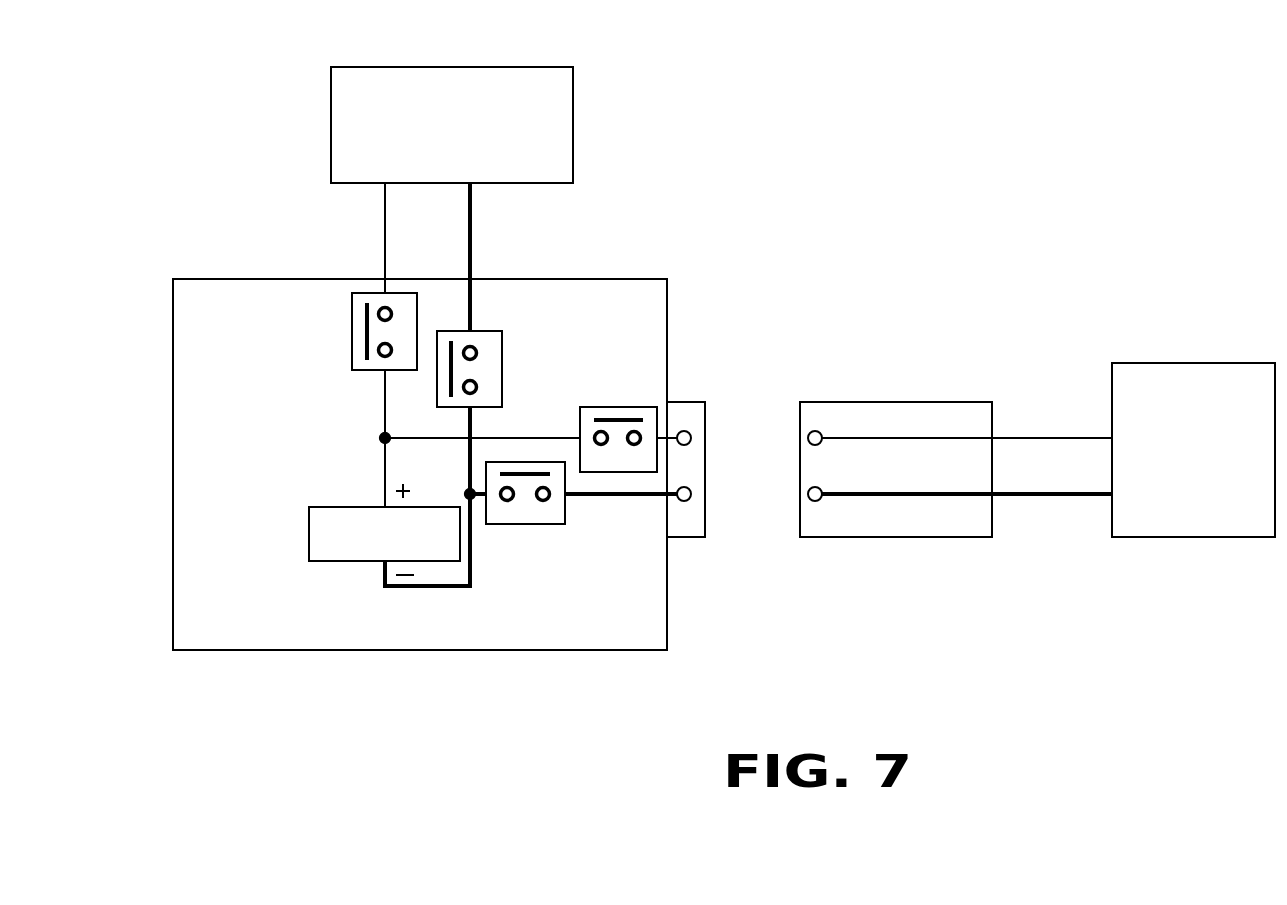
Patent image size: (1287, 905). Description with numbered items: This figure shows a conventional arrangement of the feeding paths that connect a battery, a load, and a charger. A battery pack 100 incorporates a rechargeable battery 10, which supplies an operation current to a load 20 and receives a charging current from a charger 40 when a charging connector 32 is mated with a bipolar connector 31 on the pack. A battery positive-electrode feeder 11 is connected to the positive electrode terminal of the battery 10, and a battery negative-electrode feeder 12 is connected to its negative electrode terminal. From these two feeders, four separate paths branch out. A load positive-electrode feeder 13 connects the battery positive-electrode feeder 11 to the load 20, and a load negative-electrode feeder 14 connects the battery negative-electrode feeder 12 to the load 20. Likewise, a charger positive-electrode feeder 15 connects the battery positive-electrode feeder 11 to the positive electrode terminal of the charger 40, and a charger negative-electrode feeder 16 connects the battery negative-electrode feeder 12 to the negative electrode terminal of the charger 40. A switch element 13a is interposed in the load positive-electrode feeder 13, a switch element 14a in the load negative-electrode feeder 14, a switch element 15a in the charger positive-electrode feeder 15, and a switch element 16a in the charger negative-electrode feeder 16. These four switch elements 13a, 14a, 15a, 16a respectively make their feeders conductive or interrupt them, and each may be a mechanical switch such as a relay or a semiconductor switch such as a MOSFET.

The battery pack 100 is at (315, 650).
The load 20 is at (458, 66).
The battery 10 is at (309, 540).
The battery positive-electrode feeder 11 is at (385, 480).
The battery negative-electrode feeder 12 is at (470, 577).
The load positive-electrode feeder 13 is at (385, 413).
The switch element 13a is at (352, 347).
The load negative-electrode feeder 14 is at (470, 318).
The switch element 14a is at (503, 380).
The charger positive-electrode feeder 15 is at (497, 438).
The switch element 15a is at (630, 386).
The charger negative-electrode feeder 16 is at (615, 494).
The switch element 16a is at (534, 524).
The bipolar connector 31 is at (681, 402).
The charging connector 32 is at (875, 402).
The charger 40 is at (1172, 363).